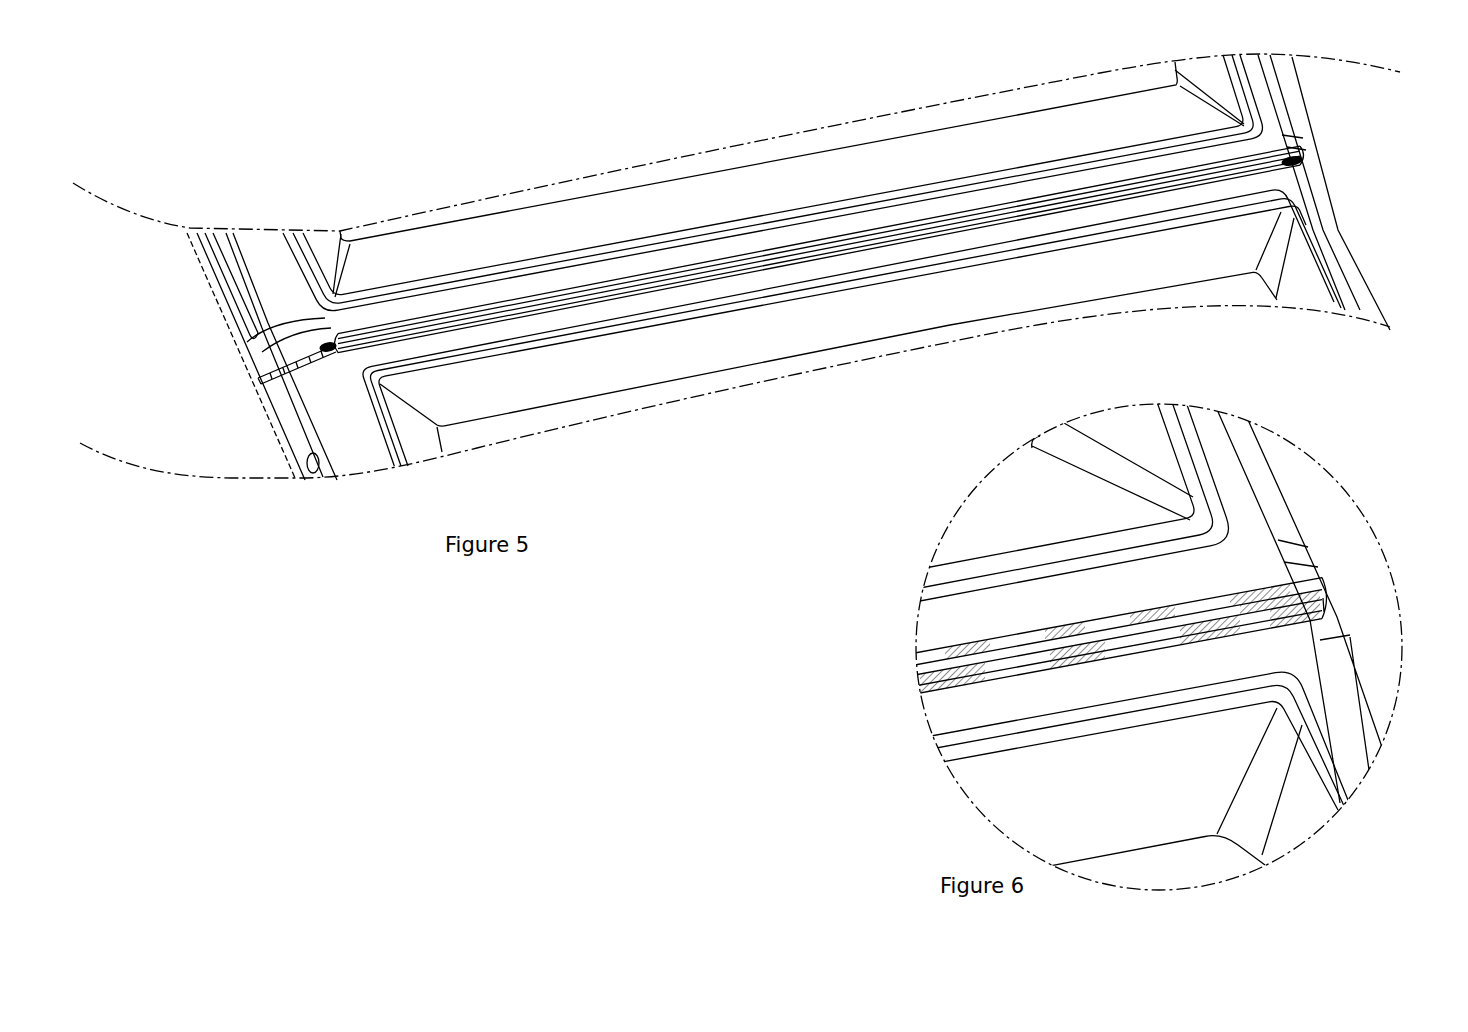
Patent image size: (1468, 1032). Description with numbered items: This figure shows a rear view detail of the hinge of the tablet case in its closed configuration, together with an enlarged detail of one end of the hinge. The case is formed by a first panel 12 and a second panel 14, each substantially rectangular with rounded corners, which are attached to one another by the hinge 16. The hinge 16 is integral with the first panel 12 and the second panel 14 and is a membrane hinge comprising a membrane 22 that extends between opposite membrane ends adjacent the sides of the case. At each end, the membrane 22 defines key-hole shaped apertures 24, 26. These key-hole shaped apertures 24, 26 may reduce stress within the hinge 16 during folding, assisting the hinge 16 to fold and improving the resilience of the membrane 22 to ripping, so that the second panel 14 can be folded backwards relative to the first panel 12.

In FIG. 5, the first panel 12 is at (247, 336).
In FIG. 6, the first panel 12 is at (1247, 447).
In FIG. 5, the second panel 14 is at (1328, 226).
In FIG. 6, the second panel 14 is at (1370, 713).
In FIG. 5, the hinge 16 is at (601, 290).
In FIG. 6, the hinge 16 is at (965, 657).
In FIG. 6, the membrane 22 is at (1100, 640).
In FIG. 5, the key-hole shaped aperture 24 is at (1294, 142).
In FIG. 6, the key-hole shaped aperture 24 is at (1282, 618).
In FIG. 5, the key-hole shaped aperture 26 is at (328, 358).